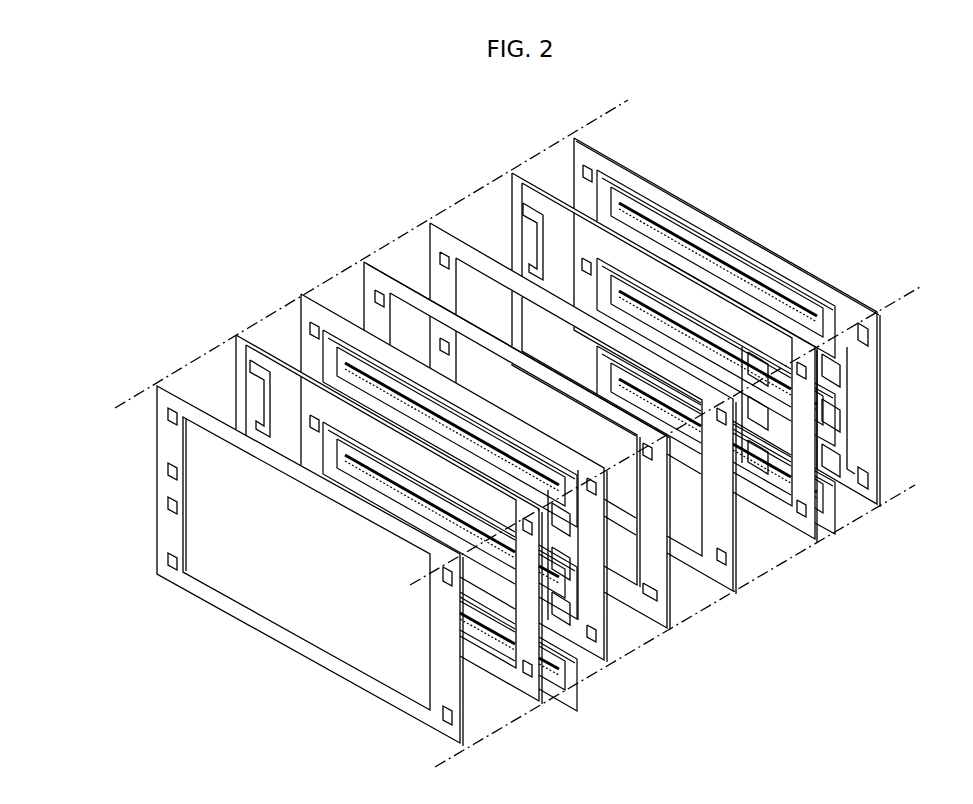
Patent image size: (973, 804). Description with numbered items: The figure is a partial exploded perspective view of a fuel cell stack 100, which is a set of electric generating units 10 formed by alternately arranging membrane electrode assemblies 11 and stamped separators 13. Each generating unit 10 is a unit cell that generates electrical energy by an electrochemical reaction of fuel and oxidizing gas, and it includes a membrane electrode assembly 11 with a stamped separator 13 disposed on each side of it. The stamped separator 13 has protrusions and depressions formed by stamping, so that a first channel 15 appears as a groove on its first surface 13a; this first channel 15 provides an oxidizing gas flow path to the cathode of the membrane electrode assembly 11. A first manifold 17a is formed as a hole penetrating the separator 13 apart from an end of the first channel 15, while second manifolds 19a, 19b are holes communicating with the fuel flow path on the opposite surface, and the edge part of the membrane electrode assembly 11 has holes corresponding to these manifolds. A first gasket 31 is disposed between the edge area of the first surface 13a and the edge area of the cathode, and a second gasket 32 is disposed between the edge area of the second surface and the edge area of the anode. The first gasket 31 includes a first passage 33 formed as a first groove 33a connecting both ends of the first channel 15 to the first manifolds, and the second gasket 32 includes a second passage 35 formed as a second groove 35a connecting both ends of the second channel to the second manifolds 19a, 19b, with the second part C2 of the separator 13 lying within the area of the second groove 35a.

The fuel cell stack 100 is at (417, 88).
The generating unit 10 is at (513, 105).
The membrane electrode assembly 11 is at (427, 221).
The stamped separator 13 is at (304, 285).
The first surface 13a is at (636, 182).
The first channel 15 is at (737, 246).
The first manifold 17a is at (578, 130).
The second manifold 19a is at (869, 331).
The second manifold 19b is at (869, 476).
The first gasket 31 is at (551, 676).
The second gasket 32 is at (681, 591).
The first passage 33 is at (241, 355).
The first groove 33a is at (260, 373).
The second passage 35 is at (676, 602).
The second groove 35a is at (646, 600).
The second part C2 is at (853, 325).